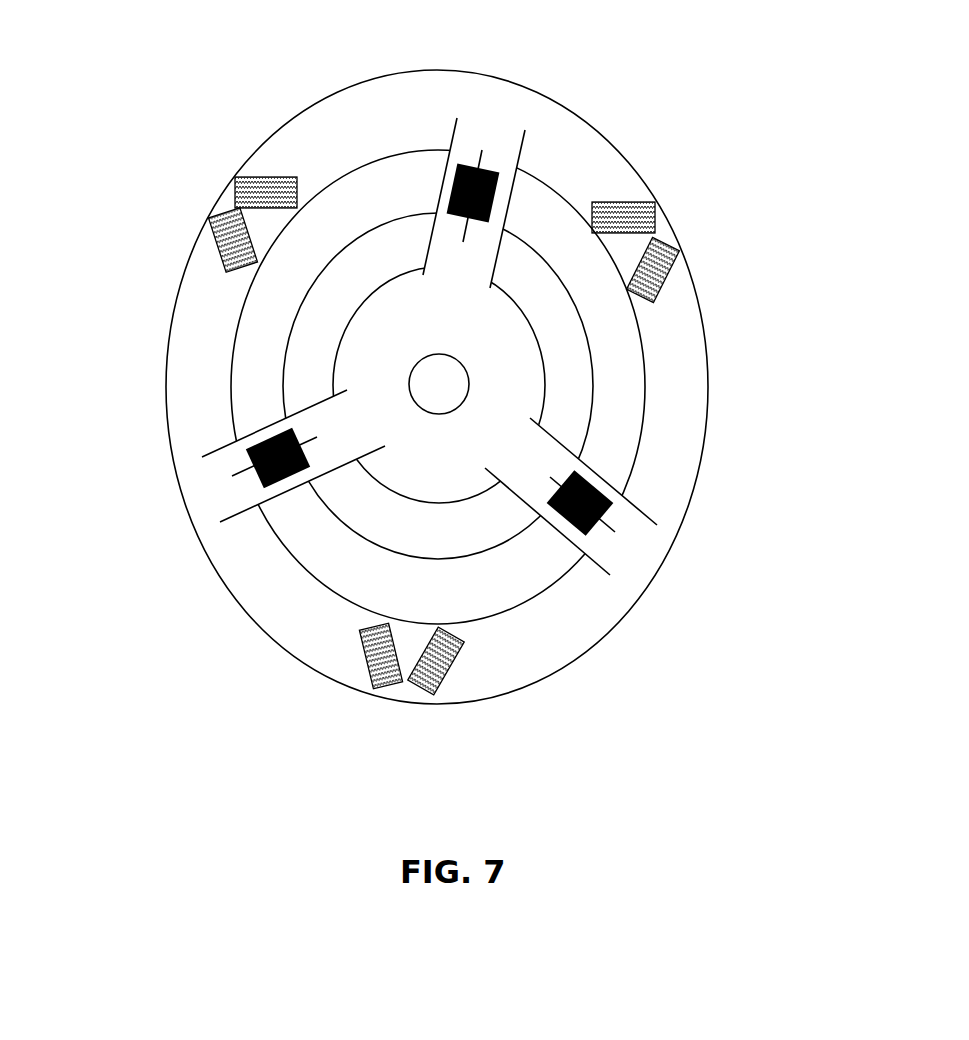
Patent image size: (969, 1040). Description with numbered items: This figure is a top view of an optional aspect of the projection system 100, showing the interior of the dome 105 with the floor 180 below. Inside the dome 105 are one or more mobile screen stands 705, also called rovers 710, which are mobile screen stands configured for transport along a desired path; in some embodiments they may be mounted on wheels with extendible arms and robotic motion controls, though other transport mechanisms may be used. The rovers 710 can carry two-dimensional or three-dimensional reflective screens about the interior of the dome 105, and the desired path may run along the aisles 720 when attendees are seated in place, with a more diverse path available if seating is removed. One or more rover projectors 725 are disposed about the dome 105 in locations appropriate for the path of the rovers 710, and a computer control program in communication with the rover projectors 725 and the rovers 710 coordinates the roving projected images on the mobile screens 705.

The projection system 100 is at (238, 785).
The dome 105 is at (743, 291).
The floor 180 is at (633, 568).
The mobile screen stand 705 is at (498, 173).
The rover 710 is at (112, 400).
The aisle 720 is at (630, 537).
The rover projector 725 is at (280, 203).